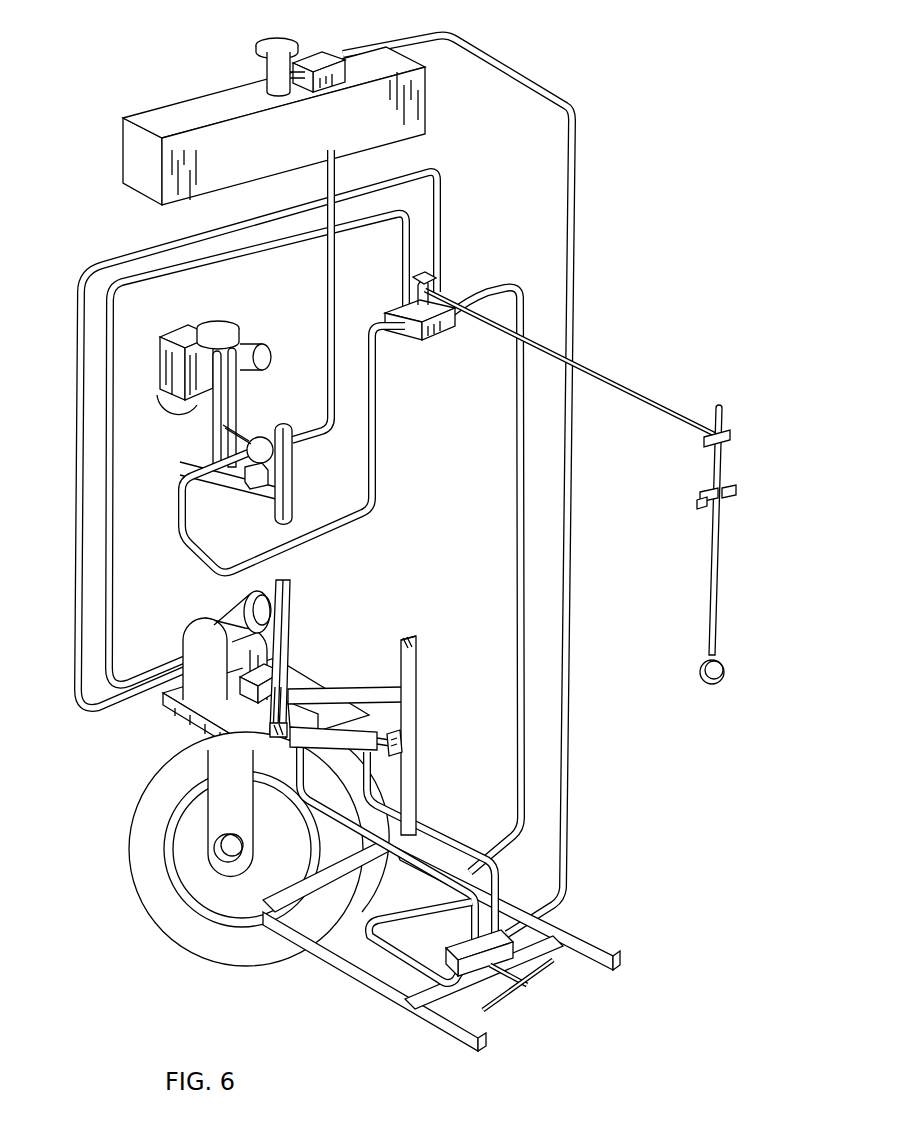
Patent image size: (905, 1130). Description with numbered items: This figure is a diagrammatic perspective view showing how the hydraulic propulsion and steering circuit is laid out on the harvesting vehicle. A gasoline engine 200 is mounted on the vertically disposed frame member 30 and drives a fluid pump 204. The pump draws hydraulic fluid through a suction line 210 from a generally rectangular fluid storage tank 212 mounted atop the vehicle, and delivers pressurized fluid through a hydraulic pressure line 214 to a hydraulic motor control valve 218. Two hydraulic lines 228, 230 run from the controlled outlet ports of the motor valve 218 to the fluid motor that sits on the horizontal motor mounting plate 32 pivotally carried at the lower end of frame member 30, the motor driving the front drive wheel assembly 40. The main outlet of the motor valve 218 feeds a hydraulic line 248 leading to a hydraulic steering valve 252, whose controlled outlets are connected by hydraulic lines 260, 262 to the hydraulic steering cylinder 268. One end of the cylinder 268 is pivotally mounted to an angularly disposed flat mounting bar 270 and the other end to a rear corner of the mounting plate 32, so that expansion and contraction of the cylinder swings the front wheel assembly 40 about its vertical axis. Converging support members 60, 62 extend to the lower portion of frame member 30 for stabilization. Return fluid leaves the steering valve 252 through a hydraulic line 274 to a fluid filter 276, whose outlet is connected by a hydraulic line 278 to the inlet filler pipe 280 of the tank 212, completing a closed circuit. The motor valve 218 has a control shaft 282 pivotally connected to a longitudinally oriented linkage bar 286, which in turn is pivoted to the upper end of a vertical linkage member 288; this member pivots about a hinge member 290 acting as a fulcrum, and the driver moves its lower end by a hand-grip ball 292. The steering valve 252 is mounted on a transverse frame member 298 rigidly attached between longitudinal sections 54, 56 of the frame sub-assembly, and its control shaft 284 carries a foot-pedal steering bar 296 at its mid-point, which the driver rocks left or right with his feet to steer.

The fluid storage tank 212 is at (200, 103).
The inlet filler pipe 280 is at (256, 54).
The fluid filter 276 is at (330, 56).
The hydraulic line 278 is at (296, 78).
The hydraulic line 274 is at (528, 93).
The hydraulic fluid suction line 210 is at (338, 172).
The control shaft 282 is at (413, 296).
The hydraulic motor control valve 218 is at (440, 327).
The linkage bar 286 is at (600, 372).
The gasoline engine 200 is at (170, 373).
The fluid pump 204 is at (262, 437).
The vertically disposed frame member 30 is at (293, 480).
The hydraulic pressure line 214 is at (375, 476).
The hydraulic line 228 is at (115, 572).
The hydraulic line 230 is at (78, 604).
The hydraulic line 248 is at (521, 588).
The hinge member 290 is at (736, 492).
The vertical linkage member 288 is at (721, 549).
The hand-grip ball 292 is at (724, 673).
The converging support member 62 is at (290, 687).
The converging support member 60 is at (300, 692).
The horizontal motor mounting plate 32 is at (177, 708).
The hydraulic steering cylinder 268 is at (338, 735).
The flat mounting bar 270 is at (408, 735).
The front drive wheel assembly 40 is at (125, 828).
The hydraulic line 262 is at (438, 835).
The hydraulic line 260 is at (418, 875).
The hydraulic steering valve 252 is at (468, 948).
The longitudinal section 56 is at (597, 945).
The longitudinal section 54 is at (345, 978).
The control shaft 284 is at (512, 970).
The foot-pedal steering bar 296 is at (495, 1003).
The transverse frame member 298 is at (425, 1008).